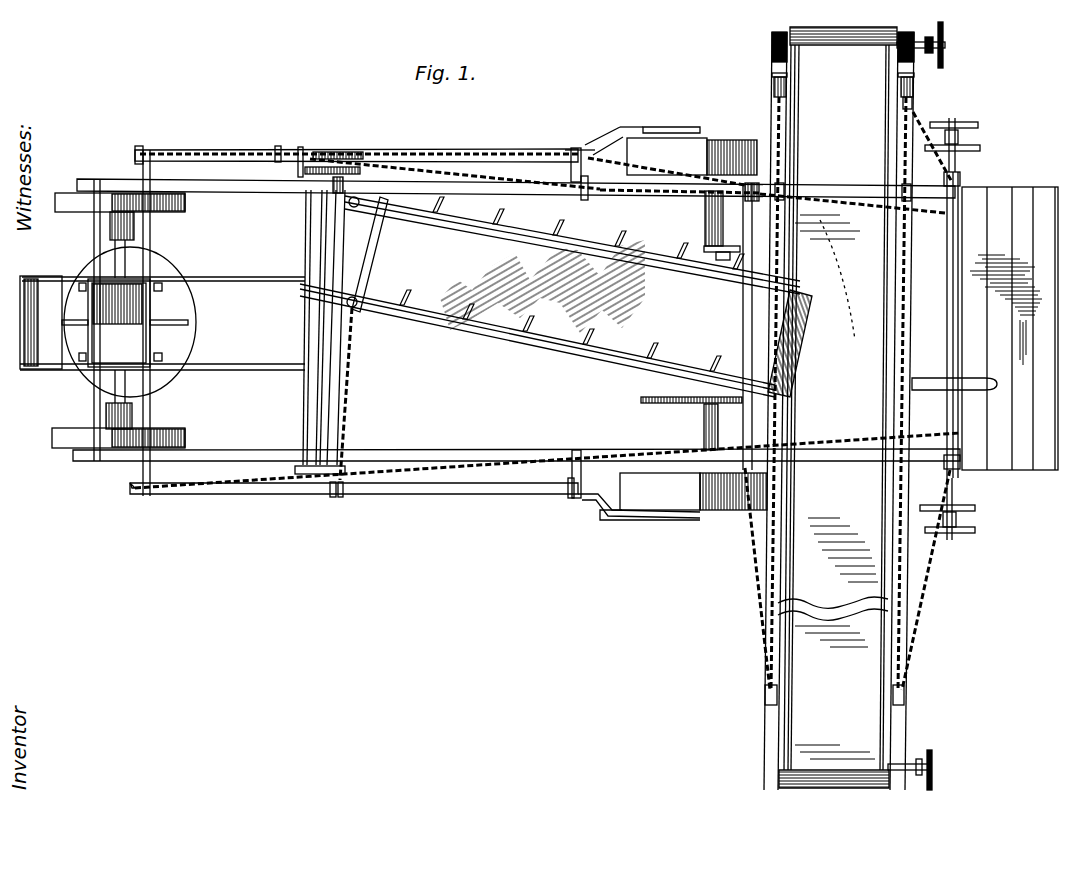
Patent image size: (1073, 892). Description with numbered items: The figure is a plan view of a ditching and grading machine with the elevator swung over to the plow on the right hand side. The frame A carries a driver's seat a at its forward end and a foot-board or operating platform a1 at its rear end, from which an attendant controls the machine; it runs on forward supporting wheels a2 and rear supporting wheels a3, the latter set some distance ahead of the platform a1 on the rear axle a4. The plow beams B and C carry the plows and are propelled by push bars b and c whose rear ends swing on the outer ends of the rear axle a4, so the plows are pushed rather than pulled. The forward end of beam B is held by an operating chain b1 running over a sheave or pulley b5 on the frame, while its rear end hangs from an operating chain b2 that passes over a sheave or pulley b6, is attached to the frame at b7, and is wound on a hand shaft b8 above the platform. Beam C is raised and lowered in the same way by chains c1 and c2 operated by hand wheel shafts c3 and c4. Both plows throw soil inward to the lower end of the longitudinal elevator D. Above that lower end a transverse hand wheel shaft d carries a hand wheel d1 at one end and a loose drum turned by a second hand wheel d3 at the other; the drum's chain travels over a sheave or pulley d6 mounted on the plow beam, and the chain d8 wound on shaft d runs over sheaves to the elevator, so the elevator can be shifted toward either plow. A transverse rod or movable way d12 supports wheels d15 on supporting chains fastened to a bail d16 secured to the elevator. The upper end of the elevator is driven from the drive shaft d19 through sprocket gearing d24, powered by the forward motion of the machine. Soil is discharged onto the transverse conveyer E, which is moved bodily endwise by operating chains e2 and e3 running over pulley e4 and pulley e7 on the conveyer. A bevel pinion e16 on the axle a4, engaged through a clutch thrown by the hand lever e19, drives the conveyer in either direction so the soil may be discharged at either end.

The frame A is at (252, 461).
The driver's seat a is at (125, 340).
The foot-board or operating platform a1 is at (1020, 205).
The forward supporting wheels a2 is at (72, 206).
The rear supporting wheels a3 is at (727, 140).
The rear axle a4 is at (706, 208).
The plow beam B is at (432, 494).
The push bar b is at (655, 522).
The operating chain b1 is at (432, 470).
The operating chain b2 is at (610, 510).
The sheave or pulley b5 is at (135, 154).
The sheave or pulley b6 is at (574, 496).
The attachment point b7 is at (976, 508).
The hand shaft b8 is at (952, 536).
The plow beam C is at (331, 151).
The push bar c is at (648, 136).
The chain c1 is at (262, 151).
The chain c2 is at (583, 148).
The hand wheel shaft c3 is at (966, 124).
The hand wheel shaft c4 is at (976, 148).
The elevator D is at (542, 298).
The hand wheel shaft d is at (338, 430).
The hand wheel d1 is at (365, 170).
The hand wheel d3 is at (312, 476).
The bracket d6 is at (335, 498).
The chain d8 is at (352, 375).
The transverse rod or movable way d12 is at (470, 228).
The wheels d15 is at (349, 204).
The bail d16 is at (368, 282).
The drive shaft d19 is at (727, 254).
The sprocket gearing d24 is at (795, 250).
The conveyer E is at (822, 78).
The operating chain e2 is at (916, 118).
The operating chain e3 is at (778, 548).
The sheave or pulley e4 is at (913, 87).
The pulley e7 is at (765, 697).
The bevel pinion e16 is at (650, 404).
The hand lever e19 is at (935, 383).